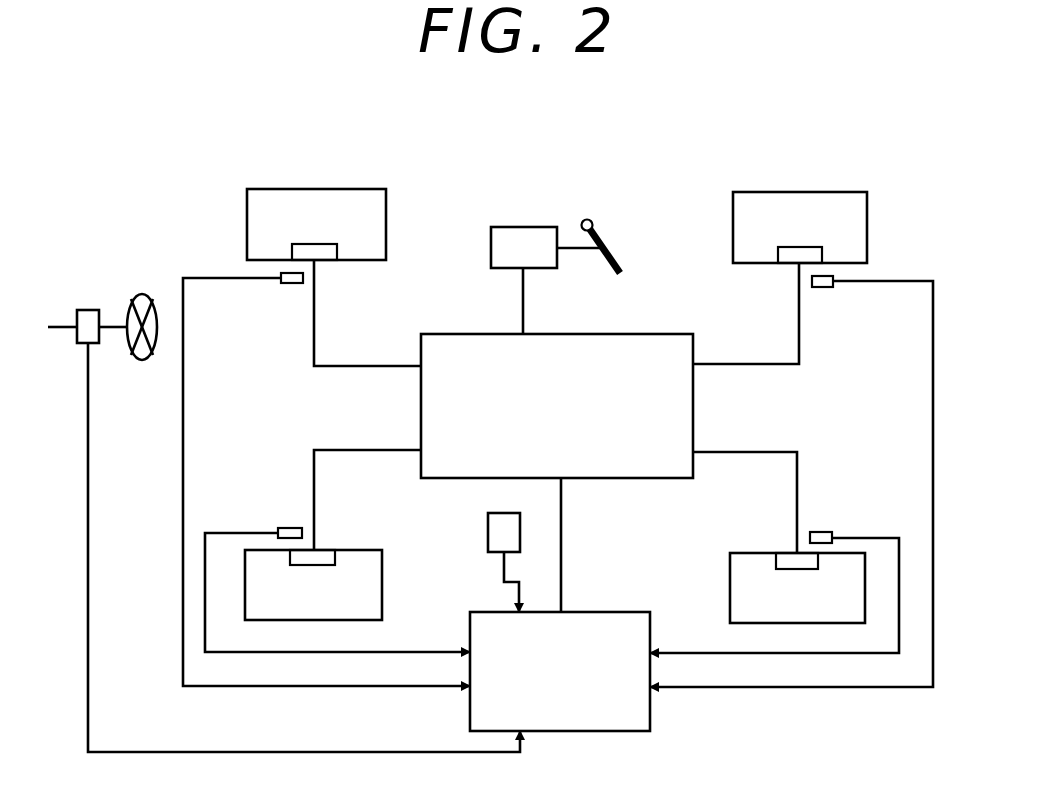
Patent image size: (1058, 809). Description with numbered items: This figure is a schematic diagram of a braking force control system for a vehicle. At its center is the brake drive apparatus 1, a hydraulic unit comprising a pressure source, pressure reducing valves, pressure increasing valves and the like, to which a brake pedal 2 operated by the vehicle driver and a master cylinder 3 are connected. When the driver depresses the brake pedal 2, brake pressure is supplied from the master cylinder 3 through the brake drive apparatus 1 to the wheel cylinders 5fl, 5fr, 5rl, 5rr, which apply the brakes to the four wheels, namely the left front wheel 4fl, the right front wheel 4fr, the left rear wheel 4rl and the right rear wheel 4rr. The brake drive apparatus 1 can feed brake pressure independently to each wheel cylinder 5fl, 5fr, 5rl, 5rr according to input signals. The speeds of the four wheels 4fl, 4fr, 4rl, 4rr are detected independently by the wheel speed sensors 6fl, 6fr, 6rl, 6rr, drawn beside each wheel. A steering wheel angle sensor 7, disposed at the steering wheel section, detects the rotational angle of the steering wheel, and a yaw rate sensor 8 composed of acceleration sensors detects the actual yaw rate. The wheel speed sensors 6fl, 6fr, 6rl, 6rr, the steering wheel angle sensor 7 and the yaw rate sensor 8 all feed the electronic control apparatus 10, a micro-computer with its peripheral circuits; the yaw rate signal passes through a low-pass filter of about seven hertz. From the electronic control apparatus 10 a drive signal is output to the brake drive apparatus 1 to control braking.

The brake drive apparatus 1 is at (448, 334).
The brake pedal 2 is at (603, 241).
The master cylinder 3 is at (523, 227).
The right front wheel 4fr is at (386, 228).
The left front wheel 4fl is at (382, 584).
The right rear wheel 4rr is at (805, 192).
The left rear wheel 4rl is at (730, 588).
The wheel cylinder for right front wheel 5fr is at (331, 263).
The wheel cylinder for left front wheel 5fl is at (323, 548).
The wheel cylinder for right rear wheel 5rr is at (782, 263).
The wheel cylinder for left rear wheel 5rl is at (780, 553).
The wheel speed sensor for right front wheel 6fr is at (290, 283).
The wheel speed sensor for left front wheel 6fl is at (288, 528).
The wheel speed sensor for right rear wheel 6rr is at (822, 287).
The wheel speed sensor for left rear wheel 6rl is at (822, 532).
The steering wheel angle sensor 7 is at (88, 310).
The yaw rate sensor 8 is at (488, 536).
The electronic control apparatus 10 is at (562, 731).